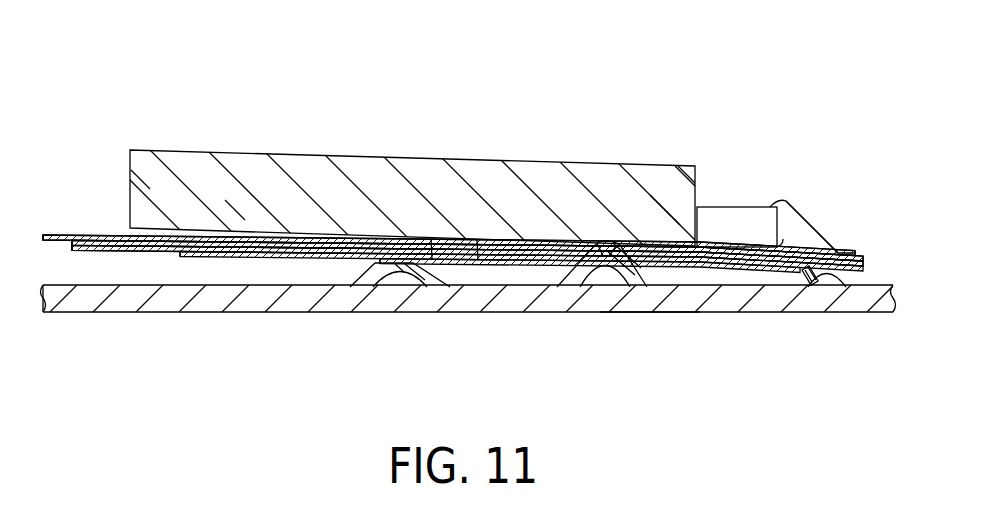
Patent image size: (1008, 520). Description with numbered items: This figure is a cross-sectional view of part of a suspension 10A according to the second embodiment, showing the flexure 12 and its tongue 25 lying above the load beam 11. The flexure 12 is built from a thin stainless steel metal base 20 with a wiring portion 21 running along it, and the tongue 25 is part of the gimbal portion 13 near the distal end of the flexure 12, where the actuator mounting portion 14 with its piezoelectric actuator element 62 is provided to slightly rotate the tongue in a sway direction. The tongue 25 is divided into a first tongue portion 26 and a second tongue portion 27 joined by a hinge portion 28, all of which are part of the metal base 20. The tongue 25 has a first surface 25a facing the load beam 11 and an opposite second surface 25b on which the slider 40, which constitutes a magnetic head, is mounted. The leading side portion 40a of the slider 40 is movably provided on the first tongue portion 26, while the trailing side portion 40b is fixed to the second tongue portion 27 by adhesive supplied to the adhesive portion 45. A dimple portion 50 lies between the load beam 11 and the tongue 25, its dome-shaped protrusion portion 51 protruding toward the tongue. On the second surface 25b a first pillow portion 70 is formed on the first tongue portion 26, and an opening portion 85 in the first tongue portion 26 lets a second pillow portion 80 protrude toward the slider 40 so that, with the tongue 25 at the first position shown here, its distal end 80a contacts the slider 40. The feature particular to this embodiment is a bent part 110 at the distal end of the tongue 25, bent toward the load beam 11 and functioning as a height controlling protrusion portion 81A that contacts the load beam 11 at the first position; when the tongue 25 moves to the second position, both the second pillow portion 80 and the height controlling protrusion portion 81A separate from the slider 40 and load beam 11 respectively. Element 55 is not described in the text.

The suspension 10A is at (765, 95).
The load beam 11 is at (322, 300).
The flexure 12 is at (113, 202).
The gimbal portion 13 is at (632, 352).
The actuator mounting portion 14 is at (752, 203).
The metal base 20 is at (195, 260).
The wiring portion 21 is at (108, 232).
The tongue 25 is at (294, 264).
The first surface 25a is at (473, 260).
The second surface 25b is at (477, 256).
The first tongue portion 26 is at (731, 272).
The second tongue portion 27 is at (247, 260).
The hinge portion 28 is at (398, 240).
The slider 40 is at (301, 170).
The leading side portion 40a is at (683, 176).
The trailing side portion 40b is at (143, 158).
The adhesive portion 45 is at (235, 232).
The dimple portion 50 is at (399, 267).
The protrusion portion 51 is at (431, 257).
The mounting substrate 55 is at (145, 332).
The actuator element 62 is at (727, 218).
The first pillow portion 70 is at (660, 248).
The second pillow portion 80 is at (615, 252).
The distal end 80a is at (597, 244).
The height controlling protrusion portion 81A is at (823, 279).
The opening portion 85 is at (535, 262).
The bent part 110 is at (803, 277).